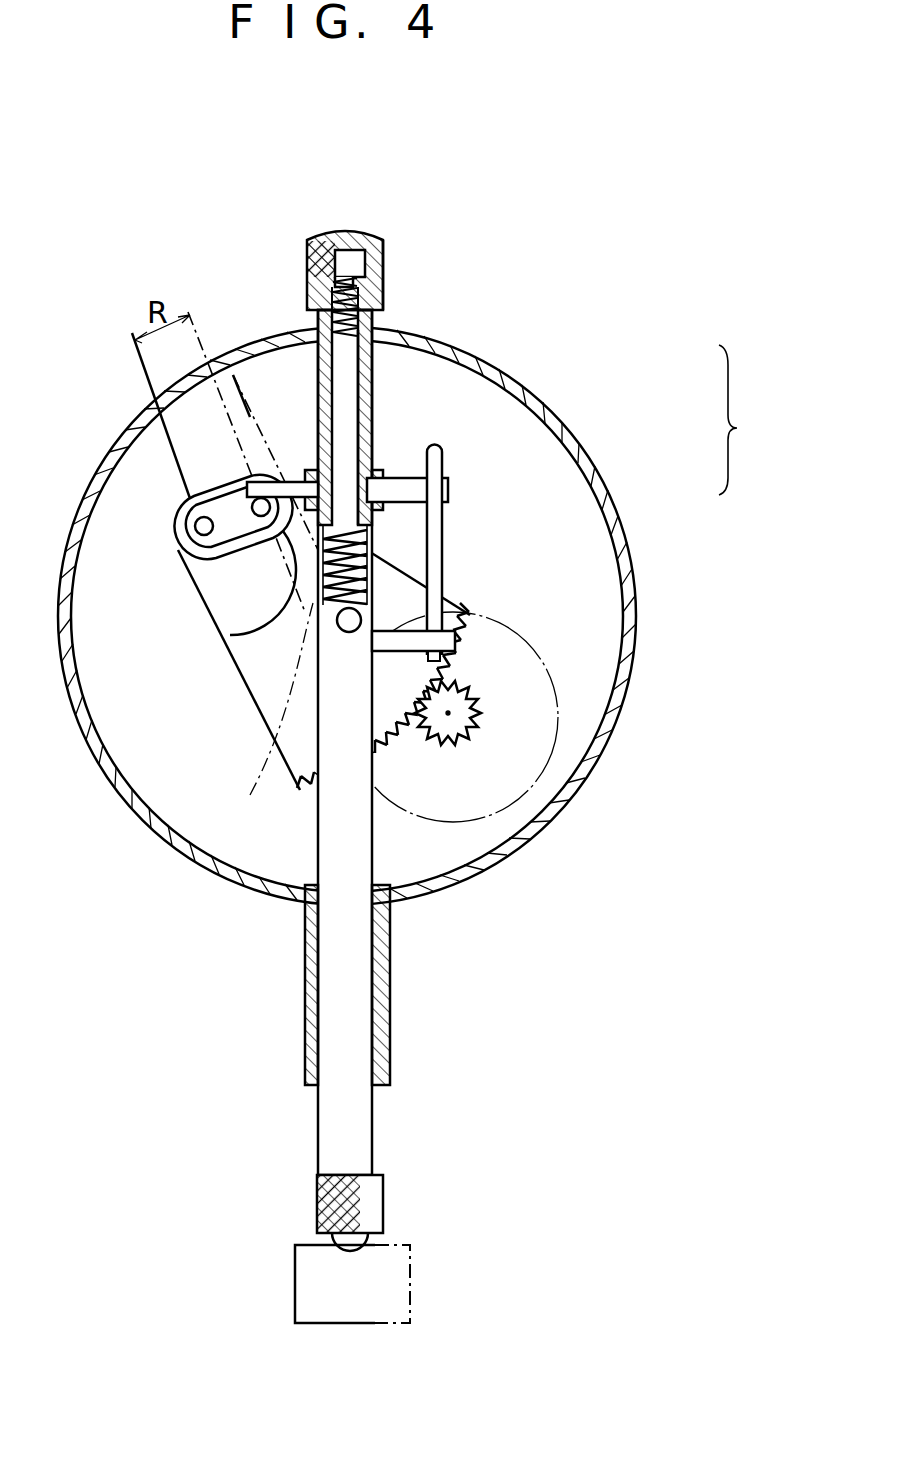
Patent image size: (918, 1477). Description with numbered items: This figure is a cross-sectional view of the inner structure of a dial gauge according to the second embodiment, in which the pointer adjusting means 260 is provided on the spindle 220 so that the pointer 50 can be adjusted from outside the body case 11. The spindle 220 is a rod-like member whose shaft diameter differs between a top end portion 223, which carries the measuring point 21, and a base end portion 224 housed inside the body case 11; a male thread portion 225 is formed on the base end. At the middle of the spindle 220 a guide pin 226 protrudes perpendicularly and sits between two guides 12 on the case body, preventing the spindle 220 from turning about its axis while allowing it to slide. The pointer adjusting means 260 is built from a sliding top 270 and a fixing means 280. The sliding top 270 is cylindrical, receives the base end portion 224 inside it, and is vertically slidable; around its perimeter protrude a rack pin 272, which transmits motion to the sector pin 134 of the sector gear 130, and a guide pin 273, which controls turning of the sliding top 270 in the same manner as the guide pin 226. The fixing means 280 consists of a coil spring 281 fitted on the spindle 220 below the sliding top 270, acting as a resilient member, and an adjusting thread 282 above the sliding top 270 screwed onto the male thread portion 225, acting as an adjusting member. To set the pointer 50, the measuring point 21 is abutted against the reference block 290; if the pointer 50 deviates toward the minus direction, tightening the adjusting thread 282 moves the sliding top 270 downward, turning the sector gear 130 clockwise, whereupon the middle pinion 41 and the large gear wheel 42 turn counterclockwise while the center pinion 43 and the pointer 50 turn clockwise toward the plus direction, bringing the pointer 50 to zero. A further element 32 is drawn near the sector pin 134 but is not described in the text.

The body case 11 is at (632, 680).
The guides 12 is at (444, 558).
The measuring point 21 is at (373, 1207).
The pin 32 is at (200, 530).
The middle pinion 41 is at (450, 733).
The large gear wheel 42 is at (560, 795).
The center pinion 43 is at (272, 768).
The pointer 50 is at (200, 318).
The sector gear 130 is at (265, 705).
The sector pin 134 is at (257, 510).
The spindle 220 is at (352, 950).
The top end portion 223 is at (378, 1028).
The base end portion 224 is at (367, 367).
The male thread portion 225 is at (352, 232).
The guide pin 226 is at (420, 645).
The pointer adjusting means 260 is at (304, 360).
The sliding top 270 is at (370, 407).
The rack pin 272 is at (306, 470).
The guide pin 273 is at (437, 487).
The fixing means 280 is at (763, 420).
The coil spring 281 is at (372, 541).
The adjusting thread 282 is at (383, 285).
The reference block 290 is at (377, 1285).